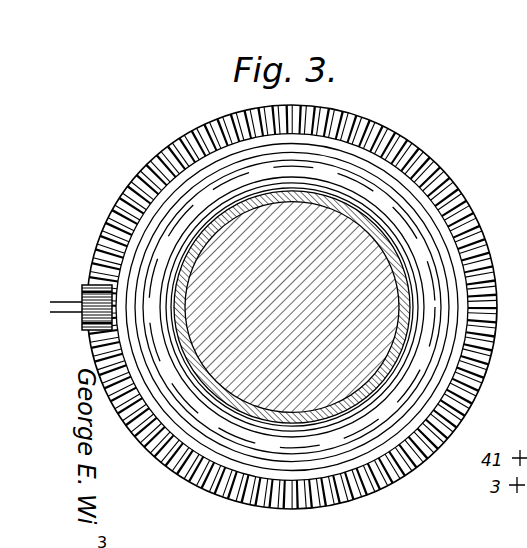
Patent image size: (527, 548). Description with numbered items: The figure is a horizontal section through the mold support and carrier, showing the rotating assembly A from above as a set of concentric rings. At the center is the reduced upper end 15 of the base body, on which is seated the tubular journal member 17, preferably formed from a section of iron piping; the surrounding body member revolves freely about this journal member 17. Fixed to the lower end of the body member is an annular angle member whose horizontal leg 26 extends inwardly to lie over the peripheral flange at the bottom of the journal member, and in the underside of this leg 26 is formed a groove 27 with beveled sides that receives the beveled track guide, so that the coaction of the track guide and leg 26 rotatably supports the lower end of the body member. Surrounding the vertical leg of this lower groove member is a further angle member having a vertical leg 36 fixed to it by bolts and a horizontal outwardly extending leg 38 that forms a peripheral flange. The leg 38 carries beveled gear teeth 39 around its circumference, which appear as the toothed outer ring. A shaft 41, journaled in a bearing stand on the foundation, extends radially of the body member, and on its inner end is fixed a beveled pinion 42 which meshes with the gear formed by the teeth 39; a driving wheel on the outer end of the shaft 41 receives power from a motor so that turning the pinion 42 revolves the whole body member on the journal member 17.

The gear assembly A is at (451, 172).
The beveled gear teeth 39 is at (448, 427).
The horizontal leg 26 is at (370, 445).
The vertical leg 36 is at (290, 470).
The horizontal outwardly extending leg 38 is at (363, 440).
The groove 27 is at (342, 440).
The reduced upper end 15 is at (420, 344).
The tubular journal member 17 is at (402, 372).
The beveled pinion 42 is at (85, 289).
The shaft 41 is at (63, 300).